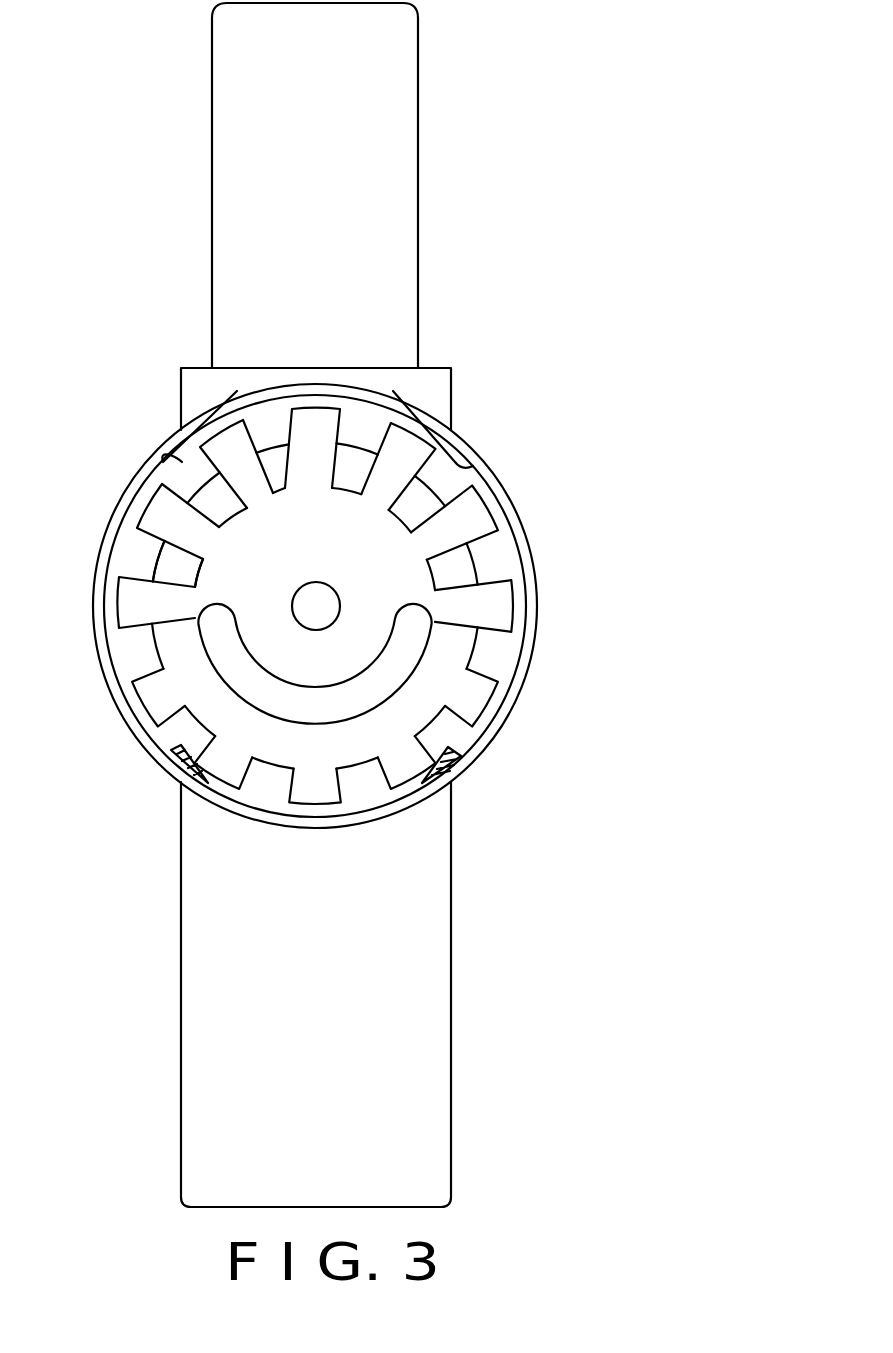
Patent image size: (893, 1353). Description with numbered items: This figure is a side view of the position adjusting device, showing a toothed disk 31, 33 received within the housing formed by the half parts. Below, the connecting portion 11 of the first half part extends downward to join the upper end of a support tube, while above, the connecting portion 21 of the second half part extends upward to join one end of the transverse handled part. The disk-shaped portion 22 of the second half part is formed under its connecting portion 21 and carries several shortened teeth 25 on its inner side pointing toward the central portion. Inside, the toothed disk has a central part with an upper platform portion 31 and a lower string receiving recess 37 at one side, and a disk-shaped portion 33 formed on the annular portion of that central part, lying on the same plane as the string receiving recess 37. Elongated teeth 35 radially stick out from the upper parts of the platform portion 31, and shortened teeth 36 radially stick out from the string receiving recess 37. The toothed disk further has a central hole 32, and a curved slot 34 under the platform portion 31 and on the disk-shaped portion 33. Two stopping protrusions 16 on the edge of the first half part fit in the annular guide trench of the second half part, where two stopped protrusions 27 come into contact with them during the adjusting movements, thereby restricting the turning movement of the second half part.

The connecting portion 11 is at (445, 1016).
The connecting portion 21 is at (410, 178).
The disk-shaped portion 22 is at (108, 524).
The shortened teeth 25 is at (472, 640).
The stopped protrusions 27 is at (166, 458).
The stopping protrusions 16 is at (172, 770).
The platform portion 31 is at (320, 590).
The central hole 32 is at (308, 620).
The disk-shaped portion 33 is at (172, 563).
The curved slot 34 is at (393, 672).
The elongated teeth 35 is at (408, 443).
The shortened teeth 36 is at (305, 788).
The string receiving recess 37 is at (350, 750).